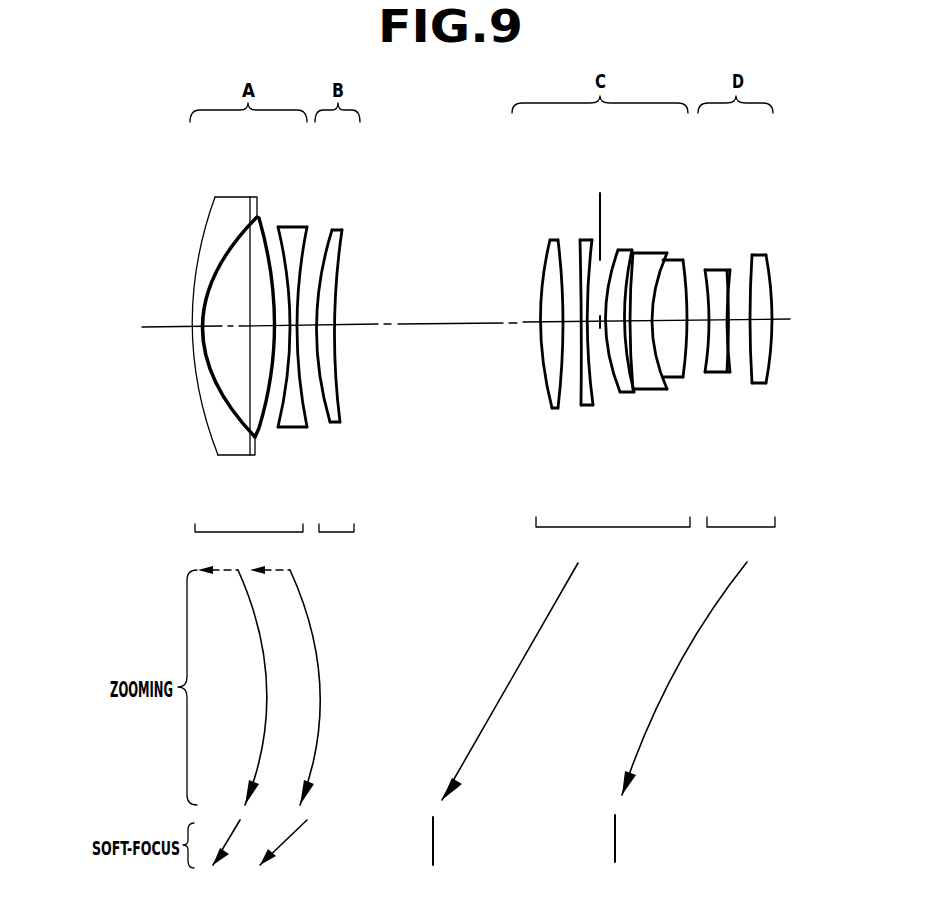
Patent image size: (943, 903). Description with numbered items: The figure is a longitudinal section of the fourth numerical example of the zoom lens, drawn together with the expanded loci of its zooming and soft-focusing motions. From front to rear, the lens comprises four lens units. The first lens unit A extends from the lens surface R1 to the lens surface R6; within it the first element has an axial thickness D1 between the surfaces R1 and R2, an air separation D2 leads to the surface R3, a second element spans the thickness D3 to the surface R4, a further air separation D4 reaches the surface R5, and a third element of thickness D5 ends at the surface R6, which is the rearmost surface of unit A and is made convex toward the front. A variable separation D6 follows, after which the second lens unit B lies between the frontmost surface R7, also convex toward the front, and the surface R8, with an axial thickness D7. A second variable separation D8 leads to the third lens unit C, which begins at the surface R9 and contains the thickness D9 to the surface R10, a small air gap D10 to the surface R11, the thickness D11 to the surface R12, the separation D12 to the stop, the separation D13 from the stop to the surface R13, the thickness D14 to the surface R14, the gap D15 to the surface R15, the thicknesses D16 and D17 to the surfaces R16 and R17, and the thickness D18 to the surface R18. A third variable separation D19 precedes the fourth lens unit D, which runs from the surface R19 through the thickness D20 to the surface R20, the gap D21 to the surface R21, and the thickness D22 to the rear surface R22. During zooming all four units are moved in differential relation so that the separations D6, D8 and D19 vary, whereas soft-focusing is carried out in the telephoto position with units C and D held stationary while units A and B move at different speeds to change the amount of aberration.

The lens surface R1 is at (207, 226).
The lens surface R2 is at (226, 246).
The lens surface R3 is at (249, 240).
The lens surface R4 is at (266, 222).
The lens surface R5 is at (280, 236).
The lens surface R6 is at (309, 228).
The lens surface R7 is at (332, 230).
The lens surface R8 is at (342, 233).
The lens surface R9 is at (546, 262).
The lens surface R10 is at (555, 240).
The lens surface R11 is at (580, 250).
The lens surface R12 is at (592, 240).
The lens surface R13 is at (616, 250).
The lens surface R14 is at (632, 253).
The lens surface R15 is at (637, 253).
The lens surface R16 is at (666, 255).
The lens surface R17 is at (681, 260).
The lens surface R18 is at (706, 270).
The lens surface R19 is at (727, 270).
The lens surface R20 is at (731, 270).
The lens surface R21 is at (756, 255).
The lens surface R22 is at (767, 256).
The axial thickness D1 is at (197, 330).
The axial air separation D2 is at (219, 330).
The axial thickness D3 is at (262, 330).
The axial air separation D4 is at (279, 330).
The axial thickness D5 is at (292, 330).
The variable axial separation D6 is at (325, 330).
The axial thickness D7 is at (350, 330).
The variable axial separation D8 is at (432, 328).
The axial thickness D9 is at (552, 323).
The axial air separation D10 is at (570, 323).
The axial thickness D11 is at (585, 323).
The axial air separation D12 is at (595, 323).
The axial air separation D13 is at (600, 380).
The axial thickness D14 is at (612, 323).
The axial air separation D15 is at (627, 323).
The axial thickness D16 is at (642, 323).
The axial thickness D17 is at (660, 323).
The axial thickness D18 is at (695, 322).
The variable axial separation D19 is at (712, 322).
The axial thickness D20 is at (740, 322).
The axial air separation D21 is at (760, 322).
The axial thickness D22 is at (778, 321).